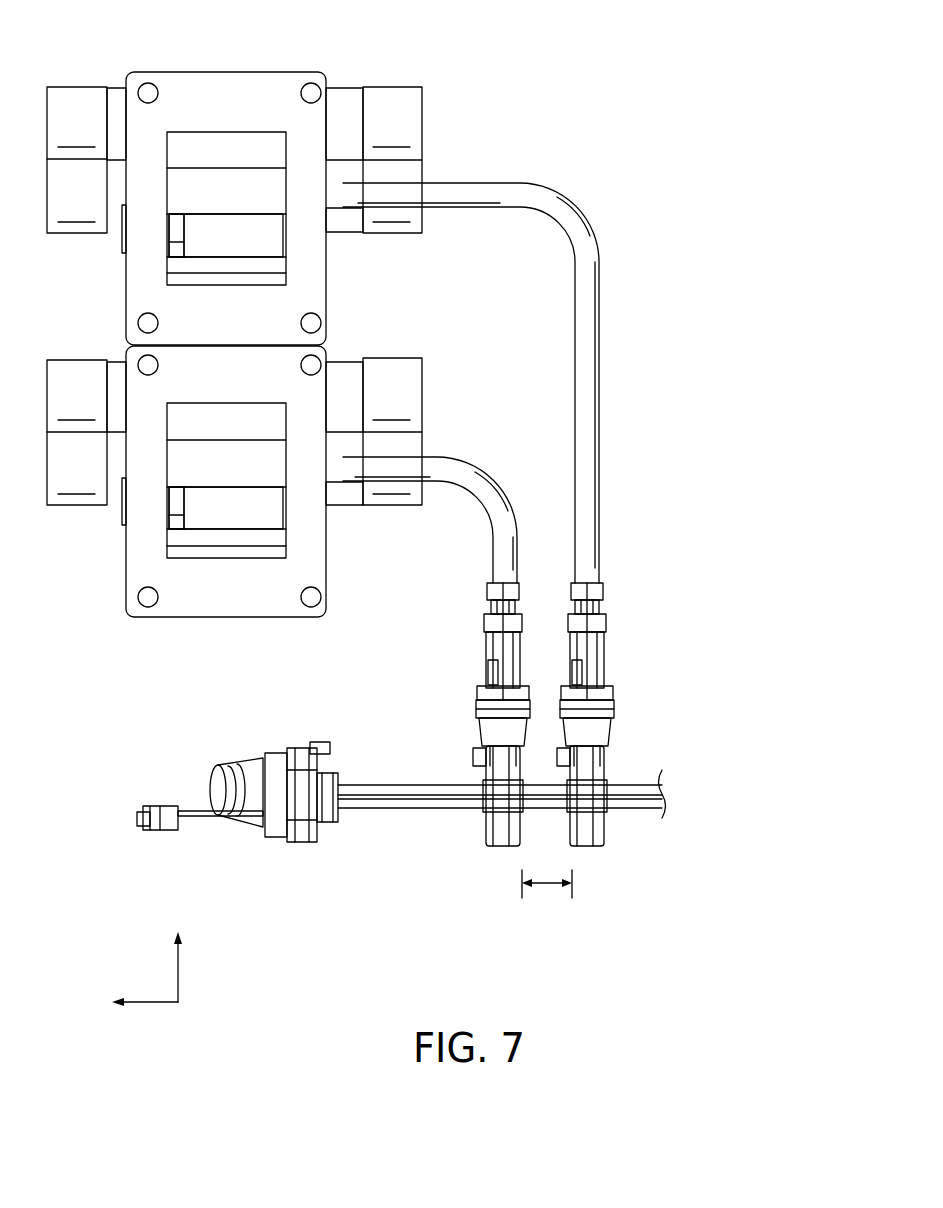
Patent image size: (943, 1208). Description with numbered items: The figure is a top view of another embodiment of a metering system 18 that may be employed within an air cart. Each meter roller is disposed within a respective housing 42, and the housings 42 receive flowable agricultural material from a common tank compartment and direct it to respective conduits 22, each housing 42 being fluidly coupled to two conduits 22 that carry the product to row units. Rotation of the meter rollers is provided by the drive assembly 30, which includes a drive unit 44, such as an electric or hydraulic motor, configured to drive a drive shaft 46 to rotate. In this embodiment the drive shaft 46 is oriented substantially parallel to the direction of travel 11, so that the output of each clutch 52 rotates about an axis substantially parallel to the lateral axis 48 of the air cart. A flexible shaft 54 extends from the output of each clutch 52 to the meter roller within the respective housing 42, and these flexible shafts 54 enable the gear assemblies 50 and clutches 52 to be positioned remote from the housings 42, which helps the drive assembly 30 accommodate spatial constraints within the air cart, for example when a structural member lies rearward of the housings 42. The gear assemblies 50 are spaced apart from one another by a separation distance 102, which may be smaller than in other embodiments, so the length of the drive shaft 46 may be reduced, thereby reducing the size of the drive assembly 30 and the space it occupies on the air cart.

The metering system 18 is at (712, 114).
The housing 42 is at (227, 72).
The conduit 22 is at (84, 108).
The flexible shaft 54 is at (588, 223).
The clutch 52 is at (570, 655).
The gear assembly 50 is at (587, 845).
The drive shaft 46 is at (628, 803).
The drive unit 44 is at (277, 763).
The drive assembly 30 is at (447, 852).
The separation distance 102 is at (547, 887).
The lateral axis 48 is at (178, 970).
The direction of travel 11 is at (148, 1005).